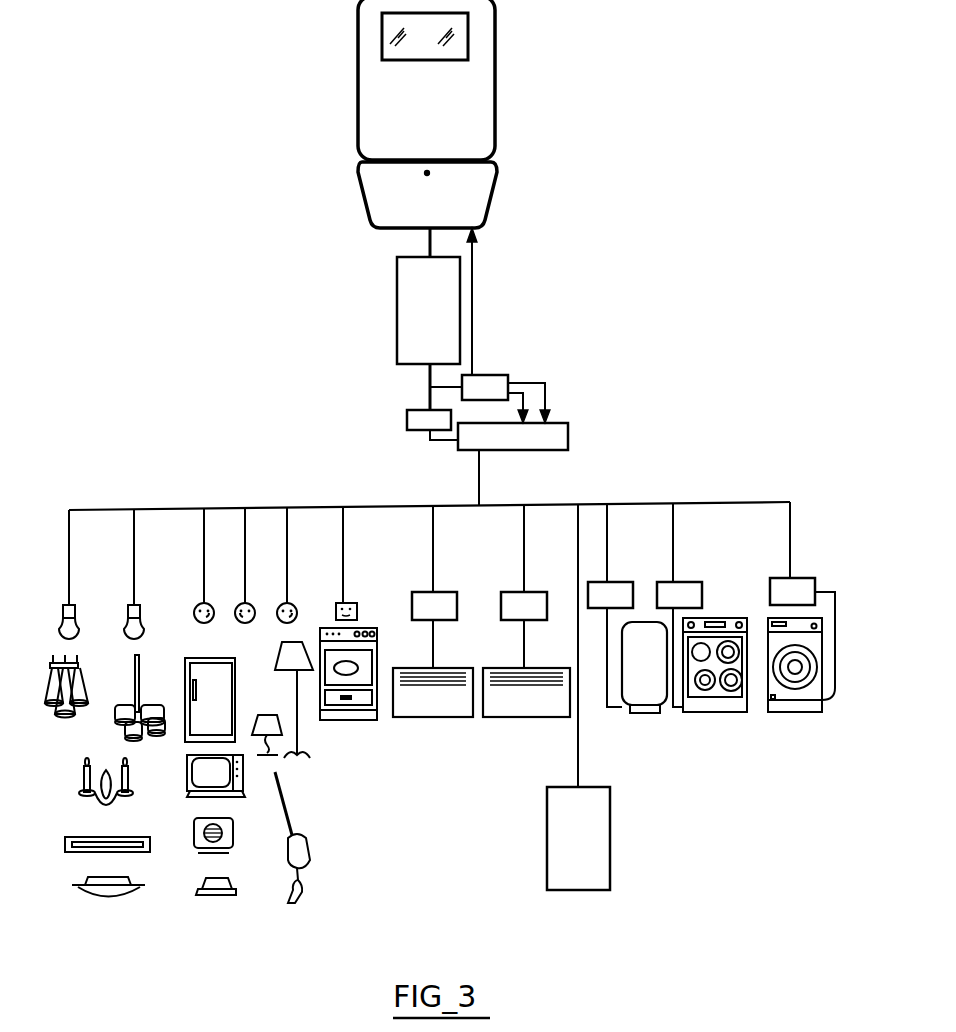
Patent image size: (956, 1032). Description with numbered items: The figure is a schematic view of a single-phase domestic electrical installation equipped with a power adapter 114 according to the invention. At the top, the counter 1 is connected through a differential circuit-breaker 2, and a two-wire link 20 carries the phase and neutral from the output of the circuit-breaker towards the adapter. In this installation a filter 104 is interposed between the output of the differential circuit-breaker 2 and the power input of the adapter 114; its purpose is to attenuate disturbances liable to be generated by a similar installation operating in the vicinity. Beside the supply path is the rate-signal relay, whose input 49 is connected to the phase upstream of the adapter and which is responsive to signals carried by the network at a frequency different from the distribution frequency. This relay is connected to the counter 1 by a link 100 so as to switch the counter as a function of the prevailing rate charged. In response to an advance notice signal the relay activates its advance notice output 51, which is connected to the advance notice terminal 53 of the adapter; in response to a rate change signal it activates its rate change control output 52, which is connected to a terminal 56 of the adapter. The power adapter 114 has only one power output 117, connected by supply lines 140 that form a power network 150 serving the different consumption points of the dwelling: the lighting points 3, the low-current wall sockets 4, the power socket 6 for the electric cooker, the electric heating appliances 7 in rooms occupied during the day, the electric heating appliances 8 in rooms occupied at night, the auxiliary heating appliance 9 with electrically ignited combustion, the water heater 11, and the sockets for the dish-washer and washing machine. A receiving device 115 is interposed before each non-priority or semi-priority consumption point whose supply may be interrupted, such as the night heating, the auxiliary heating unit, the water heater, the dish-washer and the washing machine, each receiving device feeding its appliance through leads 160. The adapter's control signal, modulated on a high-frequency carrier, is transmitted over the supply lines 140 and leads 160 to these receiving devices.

The counter 1 is at (341, 70).
The differential circuit-breaker 2 is at (397, 290).
The two-wire link 20 is at (425, 367).
The input of relay REF 49 is at (430, 388).
The filter 104 is at (407, 418).
The link 100 is at (475, 263).
The rate change control output 52 is at (523, 380).
The advance notice output 51 is at (546, 394).
The terminal of the adapter 56 is at (548, 425).
The advance notice terminal 53 is at (568, 428).
The power output 117 is at (476, 452).
The power adapter 114 is at (533, 455).
The power network 150 is at (747, 494).
The supply lines 140 is at (433, 545).
The receiving device 115 is at (427, 602).
The leads 160 is at (433, 645).
The low-current wall sockets 4 is at (198, 624).
The power socket for an electric cooker 6 is at (358, 608).
The lighting points 3 is at (158, 907).
The electric heating appliances in rooms occupied during the day 7 is at (433, 706).
The electric heating appliances in rooms occupied at night 8 is at (522, 704).
The auxiliary heating appliance 9 is at (578, 876).
The water heater 11 is at (641, 685).